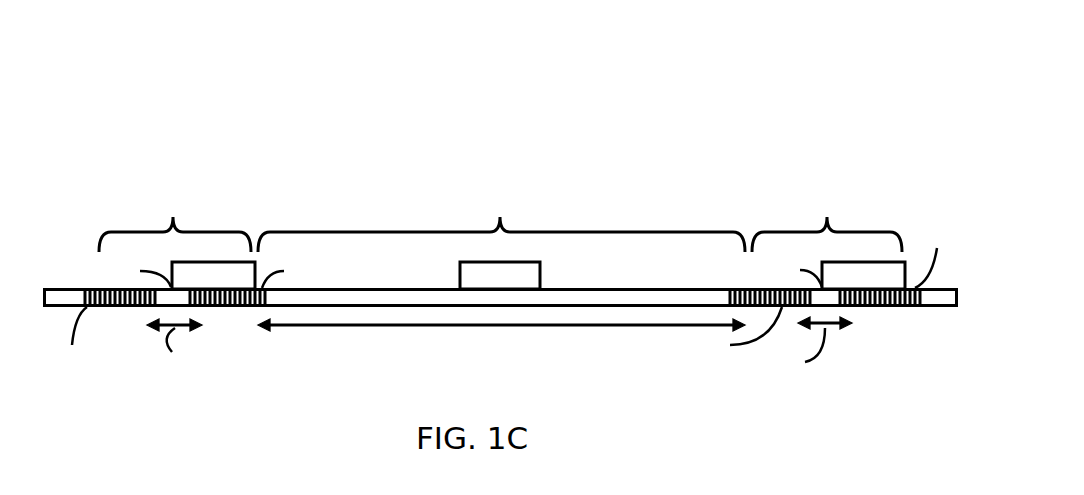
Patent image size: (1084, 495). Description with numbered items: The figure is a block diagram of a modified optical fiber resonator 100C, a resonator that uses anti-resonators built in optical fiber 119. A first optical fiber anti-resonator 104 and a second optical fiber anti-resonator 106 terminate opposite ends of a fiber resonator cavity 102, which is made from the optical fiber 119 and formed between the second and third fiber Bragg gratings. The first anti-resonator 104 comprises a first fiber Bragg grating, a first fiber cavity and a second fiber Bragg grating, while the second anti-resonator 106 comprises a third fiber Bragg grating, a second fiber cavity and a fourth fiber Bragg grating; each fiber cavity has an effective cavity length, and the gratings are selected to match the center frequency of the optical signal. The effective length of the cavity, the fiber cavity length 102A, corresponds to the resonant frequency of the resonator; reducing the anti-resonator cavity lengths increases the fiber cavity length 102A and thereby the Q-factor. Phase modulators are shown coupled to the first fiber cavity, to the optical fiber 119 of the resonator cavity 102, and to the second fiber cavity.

The modified optical fiber resonator 100C is at (184, 146).
The first optical fiber anti-resonator (FBAR1) 104 is at (197, 266).
The fiber resonator cavity 102 is at (501, 211).
The second optical fiber anti-resonator (FBAR2) 106 is at (814, 268).
The fiber cavity length (FCL) 102A is at (512, 327).
The optical fiber 119 is at (945, 308).